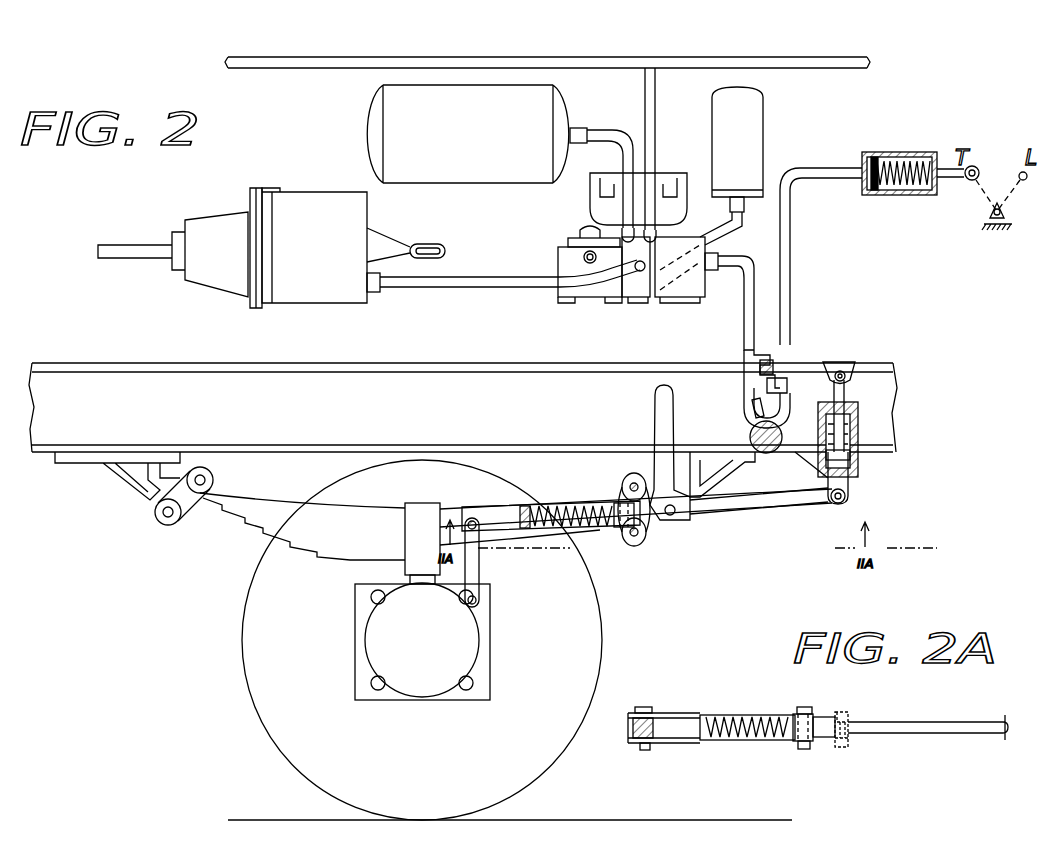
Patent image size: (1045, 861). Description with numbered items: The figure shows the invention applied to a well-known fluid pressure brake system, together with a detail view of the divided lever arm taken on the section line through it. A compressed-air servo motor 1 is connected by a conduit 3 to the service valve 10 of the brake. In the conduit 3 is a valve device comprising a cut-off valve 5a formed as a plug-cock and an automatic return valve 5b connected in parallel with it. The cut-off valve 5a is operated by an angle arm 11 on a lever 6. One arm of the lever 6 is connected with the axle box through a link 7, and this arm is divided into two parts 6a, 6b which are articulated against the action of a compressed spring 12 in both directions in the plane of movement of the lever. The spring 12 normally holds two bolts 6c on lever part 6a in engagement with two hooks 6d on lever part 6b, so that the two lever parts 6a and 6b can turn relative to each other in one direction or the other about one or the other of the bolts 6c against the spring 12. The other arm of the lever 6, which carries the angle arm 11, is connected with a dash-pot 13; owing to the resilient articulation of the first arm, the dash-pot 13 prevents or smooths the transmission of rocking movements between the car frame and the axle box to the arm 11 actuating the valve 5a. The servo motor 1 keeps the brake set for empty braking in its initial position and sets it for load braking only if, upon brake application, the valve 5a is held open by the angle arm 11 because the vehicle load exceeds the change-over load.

In FIG. 2, the compressed-air servo motor 1 is at (893, 152).
In FIG. 2, the conduit 3 is at (785, 292).
In FIG. 2, the cut-off valve 5a is at (777, 447).
In FIG. 2, the automatic return valve 5b is at (775, 360).
In FIG. 2, the lever 6 is at (648, 548).
In FIG. 2A, the lever 6 is at (866, 724).
In FIG. 2, the lever part 6a is at (545, 508).
In FIG. 2A, the lever part 6a is at (718, 715).
In FIG. 2, the lever part 6b is at (640, 528).
In FIG. 2A, the lever part 6b is at (822, 730).
In FIG. 2, the bolts 6c is at (626, 488).
In FIG. 2A, the bolts 6c is at (803, 749).
In FIG. 2, the hooks 6d is at (626, 483).
In FIG. 2, the link 7 is at (476, 560).
In FIG. 2A, the link 7 is at (633, 733).
In FIG. 2, the service valve 10 is at (725, 262).
In FIG. 2, the angle arm 11 is at (665, 432).
In FIG. 2, the compressed spring 12 is at (540, 512).
In FIG. 2A, the compressed spring 12 is at (737, 733).
In FIG. 2, the dash-pot 13 is at (860, 463).